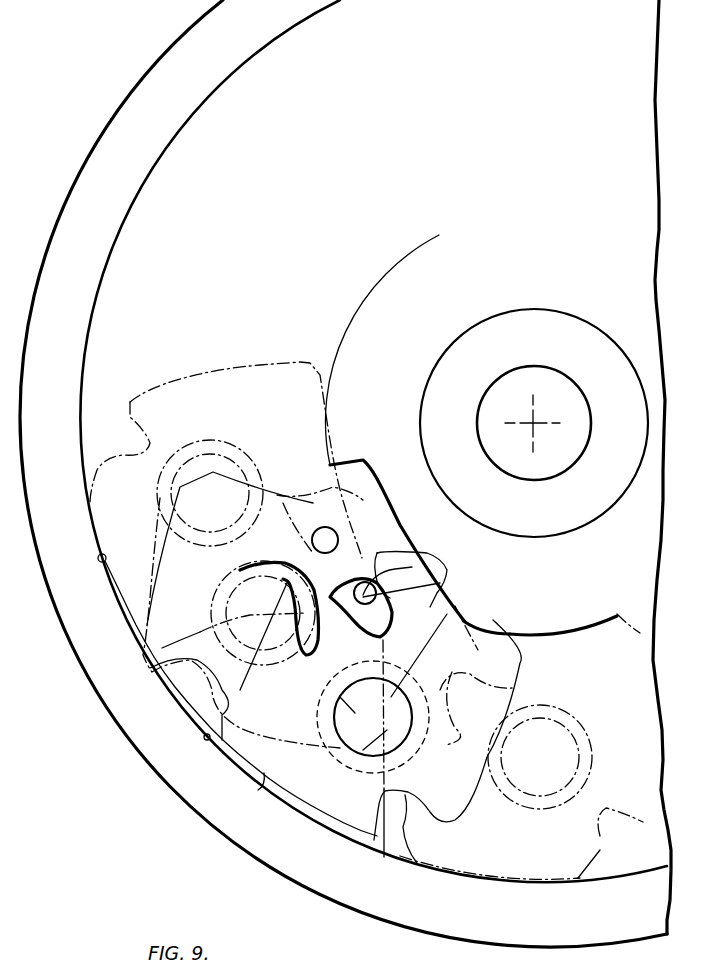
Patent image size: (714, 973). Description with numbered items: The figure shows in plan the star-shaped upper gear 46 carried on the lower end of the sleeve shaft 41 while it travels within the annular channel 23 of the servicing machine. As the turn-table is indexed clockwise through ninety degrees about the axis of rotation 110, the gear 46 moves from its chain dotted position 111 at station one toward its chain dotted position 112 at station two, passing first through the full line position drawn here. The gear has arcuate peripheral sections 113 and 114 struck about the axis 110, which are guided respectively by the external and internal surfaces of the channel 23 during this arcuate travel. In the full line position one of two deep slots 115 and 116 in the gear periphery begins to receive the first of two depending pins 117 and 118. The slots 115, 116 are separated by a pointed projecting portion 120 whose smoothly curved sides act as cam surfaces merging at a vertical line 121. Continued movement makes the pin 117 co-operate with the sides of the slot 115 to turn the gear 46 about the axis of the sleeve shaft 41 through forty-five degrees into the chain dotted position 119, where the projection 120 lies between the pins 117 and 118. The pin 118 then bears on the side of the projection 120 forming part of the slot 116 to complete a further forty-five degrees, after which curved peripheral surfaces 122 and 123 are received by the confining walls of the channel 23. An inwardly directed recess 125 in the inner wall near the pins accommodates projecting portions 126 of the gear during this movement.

The axis of rotation 110 is at (531, 420).
The chain dotted position 111 is at (609, 852).
The chain dotted position 112 is at (265, 395).
The peripheral section 113 is at (240, 769).
The peripheral section 114 is at (500, 630).
The deep slot 115 is at (385, 621).
The deep slot 116 is at (236, 572).
The depending pin 117 is at (440, 584).
The depending pin 118 is at (338, 536).
The chain dotted position 119 is at (136, 658).
The pointed projecting portion 120 is at (355, 621).
The vertical line 121 is at (316, 608).
The curved peripheral surface 122 is at (525, 690).
The curved peripheral surface 123 is at (342, 397).
The inwardly directed recess 125 is at (385, 530).
The projecting portions 126 is at (427, 553).
The annular channel 23 is at (204, 737).
The sleeve shaft 41 is at (373, 717).
The upper gear 46 is at (258, 790).